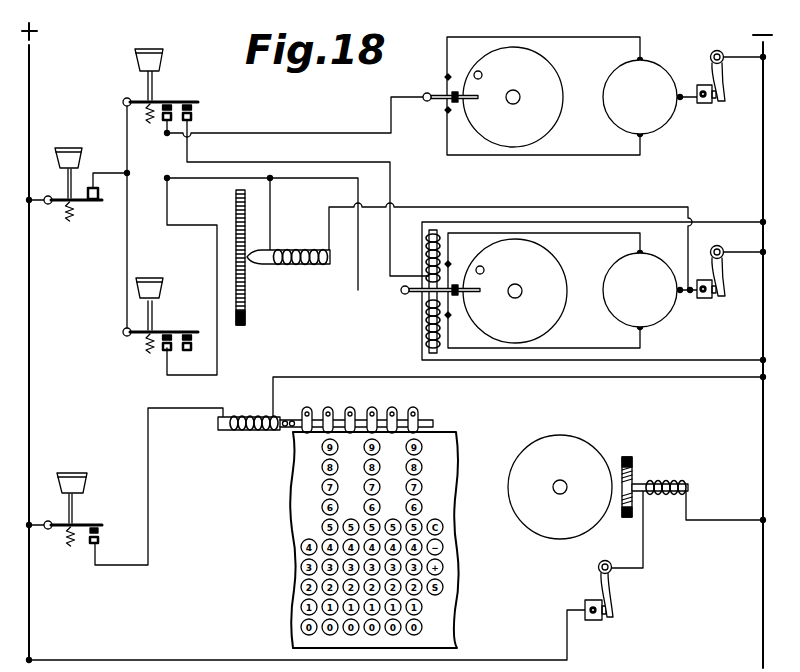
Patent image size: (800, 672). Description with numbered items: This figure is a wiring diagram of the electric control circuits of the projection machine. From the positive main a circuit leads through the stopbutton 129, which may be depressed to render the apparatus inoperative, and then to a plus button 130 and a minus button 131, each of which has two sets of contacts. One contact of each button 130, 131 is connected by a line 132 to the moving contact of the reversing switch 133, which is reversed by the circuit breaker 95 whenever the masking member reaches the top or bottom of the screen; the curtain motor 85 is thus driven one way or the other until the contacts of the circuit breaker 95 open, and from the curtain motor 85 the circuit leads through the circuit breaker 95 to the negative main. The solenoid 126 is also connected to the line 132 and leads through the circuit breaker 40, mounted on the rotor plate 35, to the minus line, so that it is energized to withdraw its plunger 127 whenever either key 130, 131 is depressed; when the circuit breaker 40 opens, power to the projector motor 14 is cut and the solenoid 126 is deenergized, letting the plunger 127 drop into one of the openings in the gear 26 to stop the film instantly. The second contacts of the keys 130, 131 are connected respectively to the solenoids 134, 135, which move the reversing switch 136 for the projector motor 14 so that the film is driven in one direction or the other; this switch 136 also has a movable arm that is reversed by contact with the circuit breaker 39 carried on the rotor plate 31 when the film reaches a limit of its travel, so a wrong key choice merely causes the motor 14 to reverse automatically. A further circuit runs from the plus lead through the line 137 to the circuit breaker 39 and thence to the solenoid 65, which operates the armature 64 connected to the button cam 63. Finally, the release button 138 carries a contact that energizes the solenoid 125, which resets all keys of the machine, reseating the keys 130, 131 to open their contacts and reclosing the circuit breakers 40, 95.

The projector motor 14 is at (614, 262).
The gear 26 is at (247, 320).
The rotor plate 31 is at (560, 316).
The rotor plate 35 is at (550, 540).
The circuit breaker 39 is at (617, 600).
The circuit breaker 40 is at (712, 300).
The button cam 63 is at (631, 460).
The armature 64 is at (689, 488).
The solenoid 65 is at (668, 493).
The curtain motor 85 is at (626, 124).
The circuit breaker 95 is at (715, 102).
The solenoid 125 is at (245, 437).
The solenoid 126 is at (293, 250).
The plunger 127 is at (288, 275).
The stopbutton 129 is at (71, 148).
The plus button 130 is at (158, 85).
The minus button 131 is at (134, 340).
The line 132 is at (183, 230).
The reversing switch 133 is at (426, 94).
The solenoid 134 is at (428, 242).
The solenoid 135 is at (430, 324).
The reversing switch 136 is at (460, 284).
The line 137 is at (176, 660).
The release button 138 is at (72, 474).